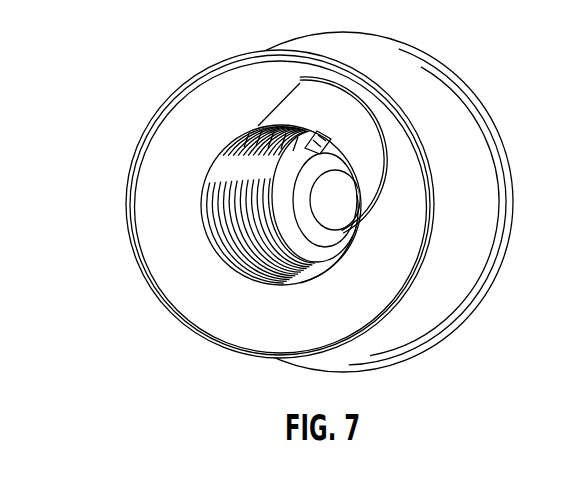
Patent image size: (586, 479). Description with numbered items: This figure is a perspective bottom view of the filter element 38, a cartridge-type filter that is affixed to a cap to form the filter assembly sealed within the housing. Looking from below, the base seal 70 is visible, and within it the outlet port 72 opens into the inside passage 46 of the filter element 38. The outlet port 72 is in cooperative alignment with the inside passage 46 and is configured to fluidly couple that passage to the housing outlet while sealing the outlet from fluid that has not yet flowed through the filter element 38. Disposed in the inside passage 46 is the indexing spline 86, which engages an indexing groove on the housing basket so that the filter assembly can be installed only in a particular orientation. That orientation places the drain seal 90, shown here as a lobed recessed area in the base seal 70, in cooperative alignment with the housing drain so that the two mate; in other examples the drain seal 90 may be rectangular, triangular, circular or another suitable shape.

The filter element 38 is at (106, 44).
The inside passage 46 is at (265, 174).
The base seal 70 is at (277, 348).
The outlet port 72 is at (255, 282).
The indexing spline 86 is at (316, 142).
The drain seal 90 is at (284, 82).